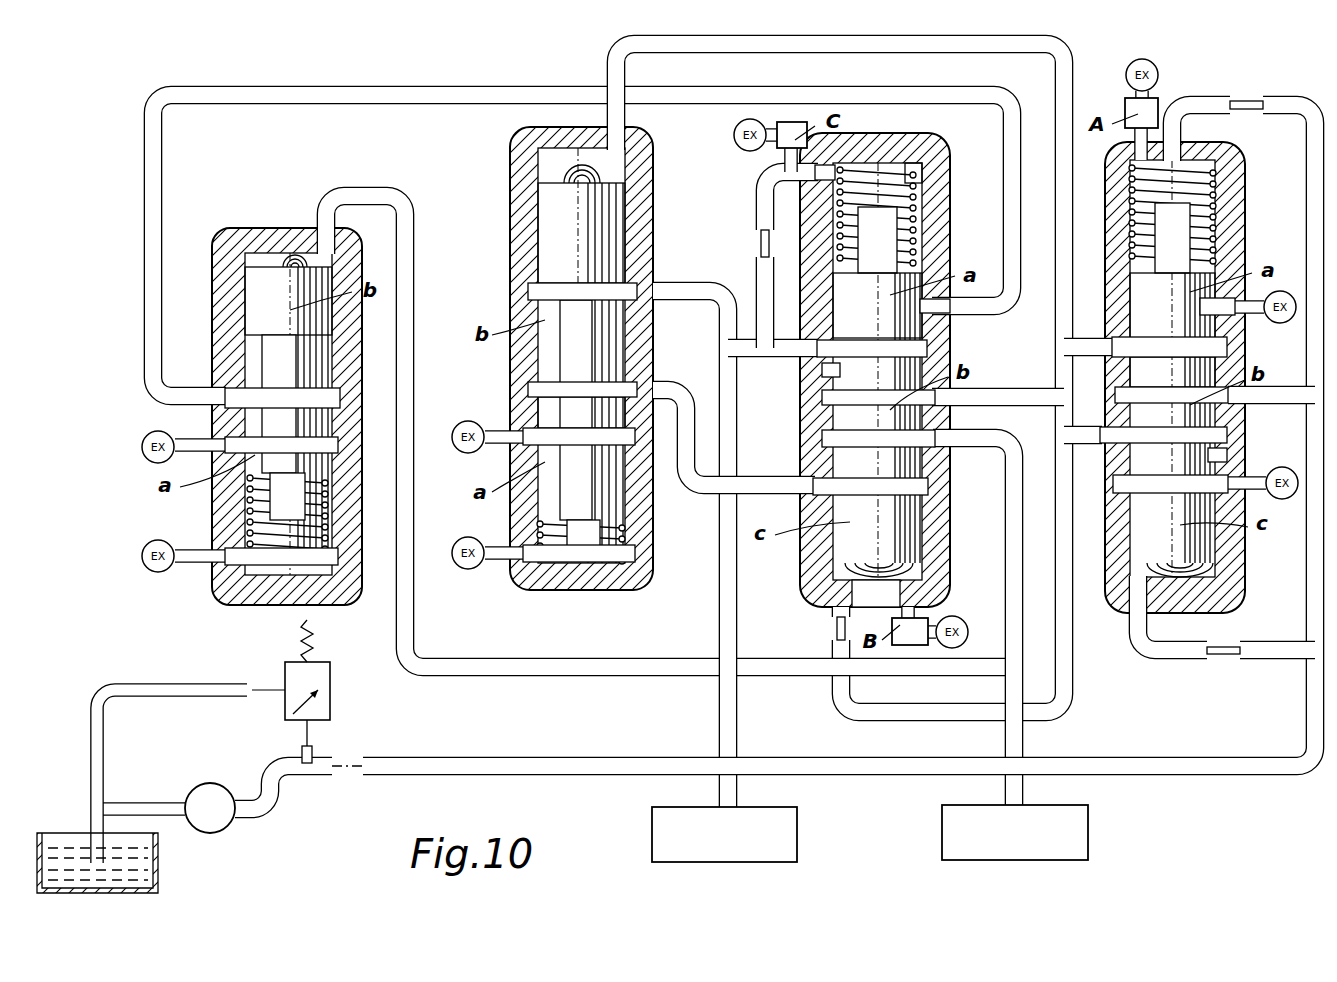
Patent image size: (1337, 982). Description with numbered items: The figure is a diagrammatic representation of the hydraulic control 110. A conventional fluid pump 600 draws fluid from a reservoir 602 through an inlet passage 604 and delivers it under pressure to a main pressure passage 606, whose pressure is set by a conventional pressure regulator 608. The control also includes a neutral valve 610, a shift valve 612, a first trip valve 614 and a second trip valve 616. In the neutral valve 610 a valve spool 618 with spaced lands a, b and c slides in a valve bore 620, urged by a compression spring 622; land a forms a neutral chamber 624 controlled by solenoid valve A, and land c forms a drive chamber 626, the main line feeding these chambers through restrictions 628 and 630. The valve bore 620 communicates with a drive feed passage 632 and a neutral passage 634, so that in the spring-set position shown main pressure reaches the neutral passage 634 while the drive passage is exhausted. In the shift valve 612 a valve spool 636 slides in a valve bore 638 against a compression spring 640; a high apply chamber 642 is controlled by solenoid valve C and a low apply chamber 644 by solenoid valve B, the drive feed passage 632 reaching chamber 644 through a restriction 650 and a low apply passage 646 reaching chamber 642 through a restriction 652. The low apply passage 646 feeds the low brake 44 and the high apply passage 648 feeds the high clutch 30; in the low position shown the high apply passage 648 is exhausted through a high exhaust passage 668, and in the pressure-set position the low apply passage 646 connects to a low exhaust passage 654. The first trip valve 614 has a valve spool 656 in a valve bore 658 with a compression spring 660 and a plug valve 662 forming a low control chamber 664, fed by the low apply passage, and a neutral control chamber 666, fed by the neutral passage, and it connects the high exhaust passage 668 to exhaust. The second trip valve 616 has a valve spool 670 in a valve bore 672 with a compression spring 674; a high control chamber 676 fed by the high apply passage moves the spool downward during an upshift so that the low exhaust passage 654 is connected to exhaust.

The hydraulic control 110 is at (538, 72).
The fluid pump 600 is at (210, 792).
The reservoir 602 is at (160, 850).
The inlet passage 604 is at (120, 806).
The main pressure passage 606 is at (414, 762).
The pressure regulator 608 is at (332, 680).
The neutral valve 610 is at (1250, 584).
The shift valve 612 is at (952, 576).
The first trip valve 614 is at (652, 590).
The second trip valve 616 is at (212, 594).
The valve spool 618 is at (1230, 367).
The valve bore 620 is at (1215, 458).
The compression spring 622 is at (1210, 200).
The neutral chamber 624 is at (1190, 175).
The drive chamber 626 is at (1210, 572).
The restriction 628 is at (1250, 100).
The restriction 630 is at (1215, 656).
The drive feed passage 632 is at (1072, 655).
The neutral passage 634 is at (1078, 72).
The valve spool 636 is at (900, 320).
The valve bore 638 is at (838, 370).
The compression spring 640 is at (905, 215).
The high apply chamber 642 is at (905, 165).
The low apply chamber 644 is at (915, 572).
The low apply passage 646 is at (727, 455).
The high apply passage 648 is at (413, 210).
The restriction 650 is at (830, 630).
The restriction 652 is at (760, 243).
The low exhaust passage 654 is at (546, 250).
The valve spool 656 is at (605, 330).
The valve bore 658 is at (622, 420).
The compression spring 660 is at (630, 542).
The plug valve 662 is at (600, 242).
The low control chamber 664 is at (610, 292).
The neutral control chamber 666 is at (612, 165).
The high exhaust passage 668 is at (690, 395).
The valve spool 670 is at (290, 362).
The valve bore 672 is at (305, 402).
The compression spring 674 is at (325, 500).
The high control chamber 676 is at (305, 250).
The low brake 44 is at (797, 808).
The high clutch 30 is at (1088, 808).